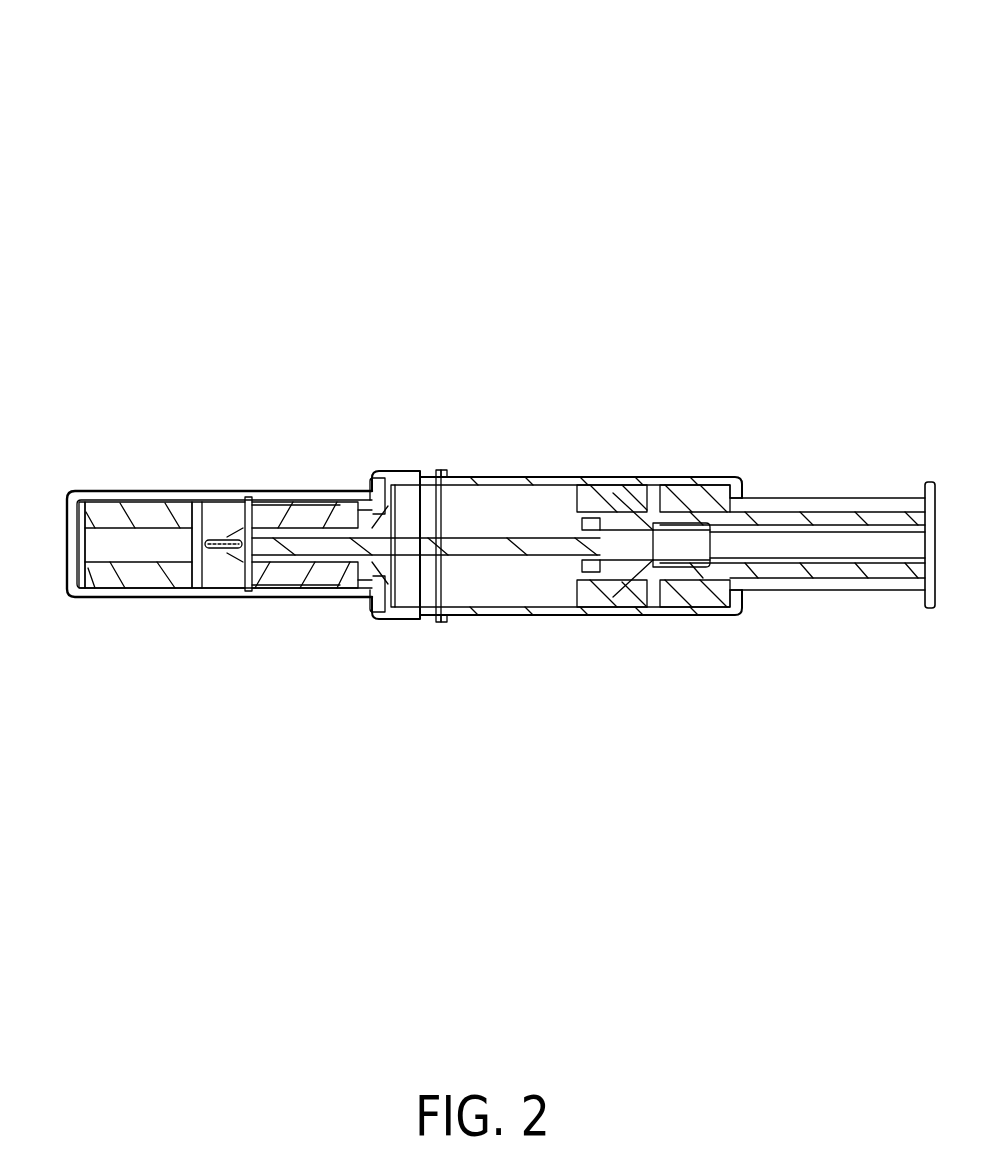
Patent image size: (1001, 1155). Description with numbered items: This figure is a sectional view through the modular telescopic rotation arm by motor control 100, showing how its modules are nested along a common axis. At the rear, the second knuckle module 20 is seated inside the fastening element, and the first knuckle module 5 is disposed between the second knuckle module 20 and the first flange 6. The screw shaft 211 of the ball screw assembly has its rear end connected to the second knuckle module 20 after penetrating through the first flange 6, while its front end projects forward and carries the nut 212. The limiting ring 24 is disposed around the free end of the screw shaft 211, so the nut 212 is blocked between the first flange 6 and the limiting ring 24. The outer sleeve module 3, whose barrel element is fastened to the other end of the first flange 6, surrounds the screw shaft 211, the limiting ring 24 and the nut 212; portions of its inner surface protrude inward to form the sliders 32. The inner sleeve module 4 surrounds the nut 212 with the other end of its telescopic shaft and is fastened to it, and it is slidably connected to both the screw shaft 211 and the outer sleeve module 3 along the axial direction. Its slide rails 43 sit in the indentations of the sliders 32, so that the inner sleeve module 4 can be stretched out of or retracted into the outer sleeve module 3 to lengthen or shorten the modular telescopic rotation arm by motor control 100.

The modular telescopic rotation arm by motor control 100 is at (100, 45).
The second knuckle module 20 is at (120, 512).
The first knuckle module 5 is at (300, 522).
The first flange 6 is at (385, 485).
The outer sleeve module 3 is at (555, 480).
The screw shaft 211 is at (542, 543).
The nut 212 is at (627, 535).
The limiting ring 24 is at (695, 535).
The sliders 32 is at (692, 598).
The inner sleeve module 4 is at (837, 508).
The slide rails 43 is at (820, 583).